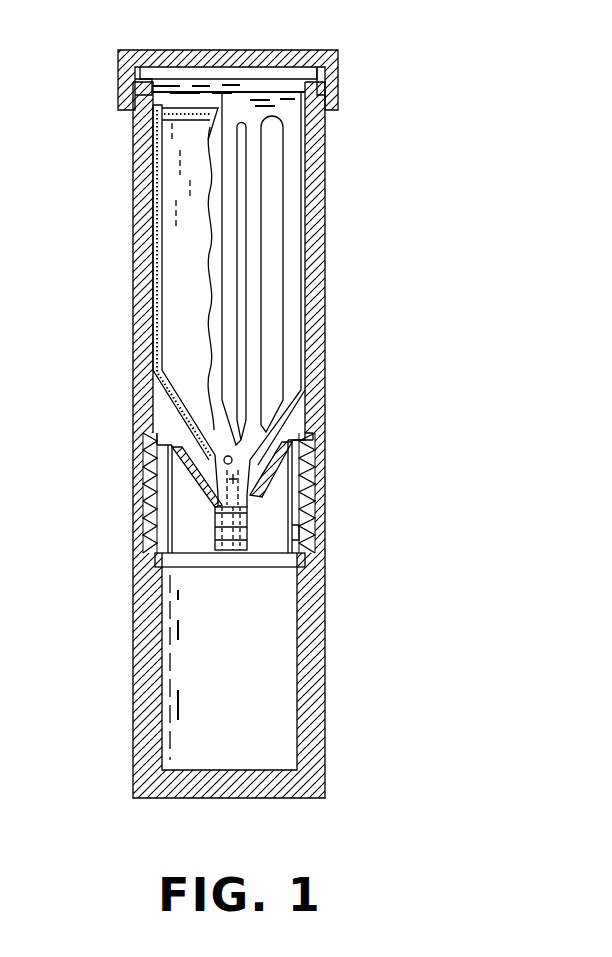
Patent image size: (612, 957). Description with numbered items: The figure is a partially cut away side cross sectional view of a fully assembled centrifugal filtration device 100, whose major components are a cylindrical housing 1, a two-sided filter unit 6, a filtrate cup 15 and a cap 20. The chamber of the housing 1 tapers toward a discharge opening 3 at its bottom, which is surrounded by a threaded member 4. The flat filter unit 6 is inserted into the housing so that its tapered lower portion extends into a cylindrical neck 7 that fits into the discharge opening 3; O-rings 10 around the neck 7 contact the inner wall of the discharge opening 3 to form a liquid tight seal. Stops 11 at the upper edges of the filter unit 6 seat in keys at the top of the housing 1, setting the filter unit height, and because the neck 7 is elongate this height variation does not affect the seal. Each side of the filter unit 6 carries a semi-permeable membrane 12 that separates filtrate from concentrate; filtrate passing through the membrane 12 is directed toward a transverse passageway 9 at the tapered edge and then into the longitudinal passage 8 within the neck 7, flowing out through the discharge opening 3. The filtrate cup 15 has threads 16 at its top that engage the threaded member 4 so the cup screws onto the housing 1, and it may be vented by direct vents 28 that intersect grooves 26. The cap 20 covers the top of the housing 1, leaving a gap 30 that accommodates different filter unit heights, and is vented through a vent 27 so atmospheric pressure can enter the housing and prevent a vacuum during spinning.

The housing 1 is at (312, 208).
The discharge opening 3 is at (217, 523).
The threaded member 4 is at (138, 488).
The filter unit 6 is at (283, 112).
The neck 7 is at (228, 567).
The longitudinal passage 8 is at (300, 494).
The transverse passageway 9 is at (235, 459).
The O-rings 10 is at (210, 530).
The stops 11 is at (147, 87).
The semi-permeable membrane 12 is at (185, 180).
The filtrate cup 15 is at (310, 668).
The threads 16 is at (147, 455).
The cap 20 is at (198, 62).
The grooves 26 is at (300, 533).
The vent 27 is at (340, 82).
The direct vents 28 is at (313, 442).
The gap 30 is at (305, 76).
The centrifugal filtration device 100 is at (392, 318).